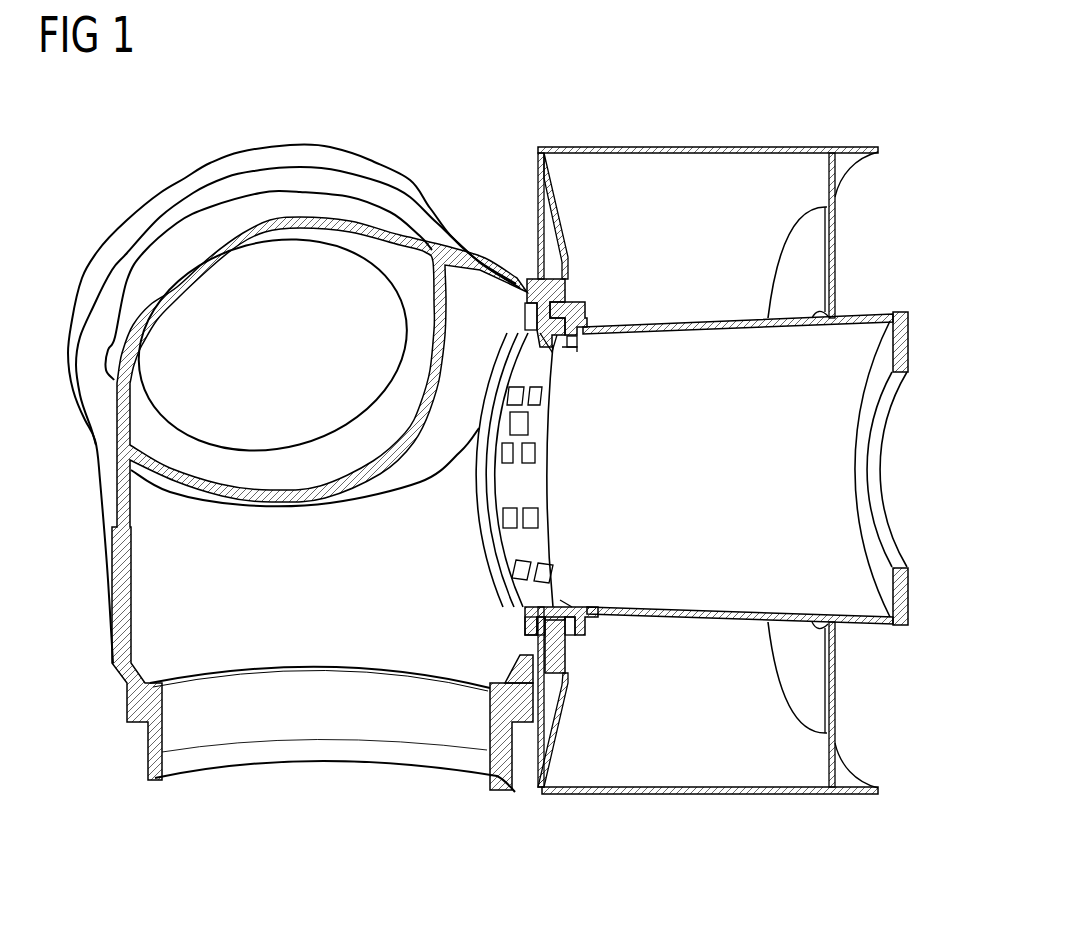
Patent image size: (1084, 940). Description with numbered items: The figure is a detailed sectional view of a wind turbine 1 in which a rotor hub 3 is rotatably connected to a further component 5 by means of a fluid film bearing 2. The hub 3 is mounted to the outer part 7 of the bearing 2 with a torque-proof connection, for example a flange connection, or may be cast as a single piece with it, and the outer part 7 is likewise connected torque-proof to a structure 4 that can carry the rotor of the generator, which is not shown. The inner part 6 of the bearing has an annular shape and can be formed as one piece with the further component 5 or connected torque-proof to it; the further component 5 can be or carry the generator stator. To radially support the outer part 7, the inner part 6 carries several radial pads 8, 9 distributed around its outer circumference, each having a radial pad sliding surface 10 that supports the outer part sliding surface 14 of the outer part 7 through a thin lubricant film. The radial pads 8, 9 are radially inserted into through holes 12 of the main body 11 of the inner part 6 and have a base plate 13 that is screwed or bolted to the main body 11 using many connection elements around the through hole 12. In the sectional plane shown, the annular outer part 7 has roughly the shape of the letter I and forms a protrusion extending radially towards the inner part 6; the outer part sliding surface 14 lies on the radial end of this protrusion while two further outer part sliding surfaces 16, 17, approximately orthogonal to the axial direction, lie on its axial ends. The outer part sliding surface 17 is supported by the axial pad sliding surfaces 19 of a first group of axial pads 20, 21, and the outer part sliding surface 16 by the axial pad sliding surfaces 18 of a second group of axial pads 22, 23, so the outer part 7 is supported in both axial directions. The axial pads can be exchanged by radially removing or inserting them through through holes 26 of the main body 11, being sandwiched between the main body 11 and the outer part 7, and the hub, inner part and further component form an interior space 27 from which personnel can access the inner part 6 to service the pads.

The wind turbine 1 is at (87, 706).
The fluid film bearing 2 is at (501, 470).
The rotor hub 3 is at (163, 548).
The structure 4 is at (720, 147).
The further component 5 is at (716, 326).
The inner part 6 is at (582, 342).
The outer part 7 is at (554, 298).
The radial pad 8 is at (538, 347).
The radial pad 9 is at (524, 426).
The radial pad sliding surface 10 is at (565, 315).
The main body 11 is at (575, 350).
The through hole 12 is at (539, 332).
The base plate 13 is at (540, 354).
The outer part sliding surface 14 is at (550, 335).
The outer part sliding surface 16 is at (533, 609).
The outer part sliding surface 17 is at (582, 631).
The axial pad sliding surface 18 is at (551, 611).
The axial pad sliding surface 19 is at (554, 607).
The axial pad 20 is at (573, 625).
The axial pad 21 is at (531, 457).
The axial pad 22 is at (530, 626).
The axial pad 23 is at (507, 453).
The through hole 26 is at (573, 598).
The interior space 27 is at (813, 470).